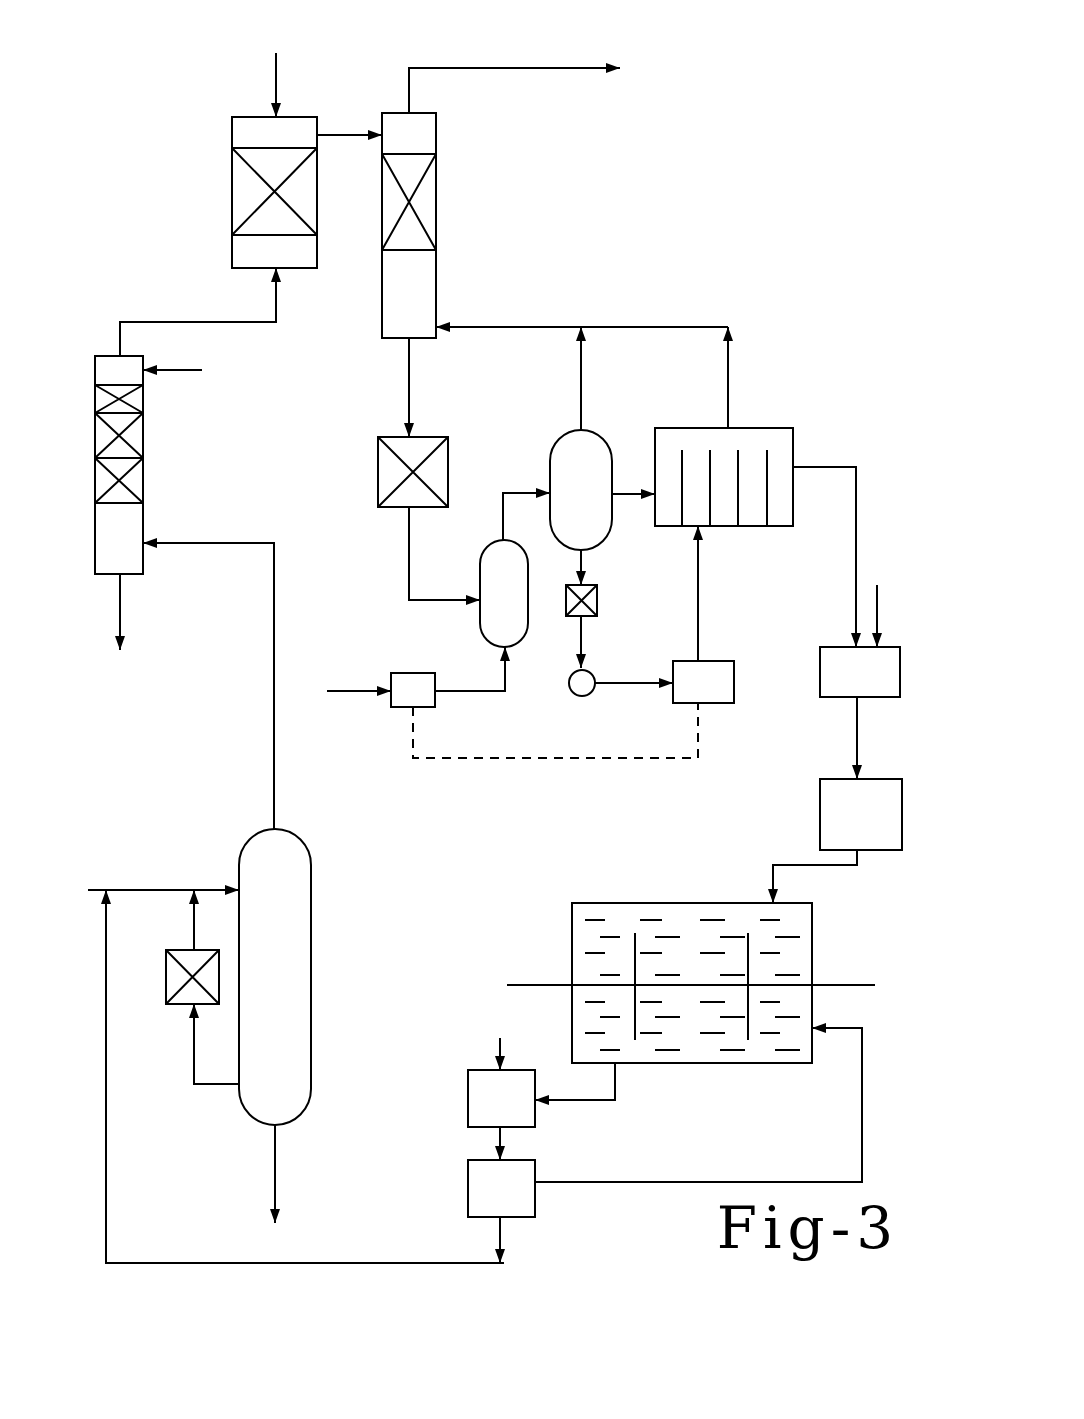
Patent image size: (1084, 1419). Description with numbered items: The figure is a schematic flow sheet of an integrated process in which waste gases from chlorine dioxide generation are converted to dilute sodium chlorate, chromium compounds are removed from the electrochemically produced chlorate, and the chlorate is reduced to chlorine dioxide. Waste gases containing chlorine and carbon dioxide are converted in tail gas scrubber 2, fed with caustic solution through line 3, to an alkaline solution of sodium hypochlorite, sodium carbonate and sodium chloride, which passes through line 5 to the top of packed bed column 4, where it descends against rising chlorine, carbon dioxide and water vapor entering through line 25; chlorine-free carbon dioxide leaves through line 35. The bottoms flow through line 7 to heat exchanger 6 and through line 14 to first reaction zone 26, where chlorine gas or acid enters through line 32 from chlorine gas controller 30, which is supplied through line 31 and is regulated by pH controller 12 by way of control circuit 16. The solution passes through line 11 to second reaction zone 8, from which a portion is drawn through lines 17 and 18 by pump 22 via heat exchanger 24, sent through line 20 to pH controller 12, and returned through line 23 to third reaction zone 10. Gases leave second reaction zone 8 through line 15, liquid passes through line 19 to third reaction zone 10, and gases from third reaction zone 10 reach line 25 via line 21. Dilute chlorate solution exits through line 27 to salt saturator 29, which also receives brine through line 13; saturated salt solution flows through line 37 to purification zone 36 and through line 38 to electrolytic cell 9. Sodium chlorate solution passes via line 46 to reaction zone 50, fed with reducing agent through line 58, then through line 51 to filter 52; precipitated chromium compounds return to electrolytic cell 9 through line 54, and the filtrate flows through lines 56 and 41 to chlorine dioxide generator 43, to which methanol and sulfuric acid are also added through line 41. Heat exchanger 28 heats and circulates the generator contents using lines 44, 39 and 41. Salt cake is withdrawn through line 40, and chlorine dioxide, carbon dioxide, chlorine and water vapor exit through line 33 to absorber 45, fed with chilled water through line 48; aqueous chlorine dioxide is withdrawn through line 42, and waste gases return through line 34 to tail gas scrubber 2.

The tail gas scrubber 2 is at (232, 200).
The line 3 is at (276, 83).
The packed bed column 4 is at (436, 210).
The line 5 is at (342, 133).
The heat exchanger 6 is at (378, 475).
The line 7 is at (409, 393).
The second reaction zone 8 is at (555, 453).
The electrolytic cell 9 is at (572, 937).
The third reaction zone 10 is at (793, 448).
The line 11 is at (503, 487).
The pH controller 12 is at (734, 680).
The line 13 is at (880, 608).
The line 14 is at (409, 562).
The line 15 is at (581, 413).
The control circuit 16 is at (555, 758).
The line 17 is at (577, 562).
The line 18 is at (577, 633).
The line 19 is at (620, 500).
The line 20 is at (632, 683).
The line 21 is at (728, 378).
The pump 22 is at (573, 697).
The line 23 is at (698, 603).
The heat exchanger 24 is at (597, 595).
The line 25 is at (663, 327).
The first reaction zone 26 is at (480, 570).
The line 27 is at (856, 485).
The heat exchanger 28 is at (178, 1005).
The salt saturator 29 is at (837, 645).
The chlorine gas controller 30 is at (423, 707).
The line 31 is at (363, 693).
The line 32 is at (480, 688).
The line 33 is at (274, 630).
The line 34 is at (276, 301).
The line 35 is at (500, 68).
The purification zone 36 is at (820, 797).
The line 37 is at (862, 735).
The line 38 is at (800, 865).
The line 39 is at (194, 922).
The line 40 is at (275, 1176).
The line 41 is at (204, 888).
The line 42 is at (120, 600).
The chlorine dioxide generator 43 is at (311, 929).
The line 44 is at (204, 1086).
The absorber 45 is at (143, 483).
The line 46 is at (615, 1077).
The line 48 is at (173, 370).
The reaction zone 50 is at (535, 1115).
The line 51 is at (478, 1135).
The filter 52 is at (535, 1200).
The line 54 is at (862, 1088).
The line 56 is at (325, 1263).
The line 58 is at (494, 1042).